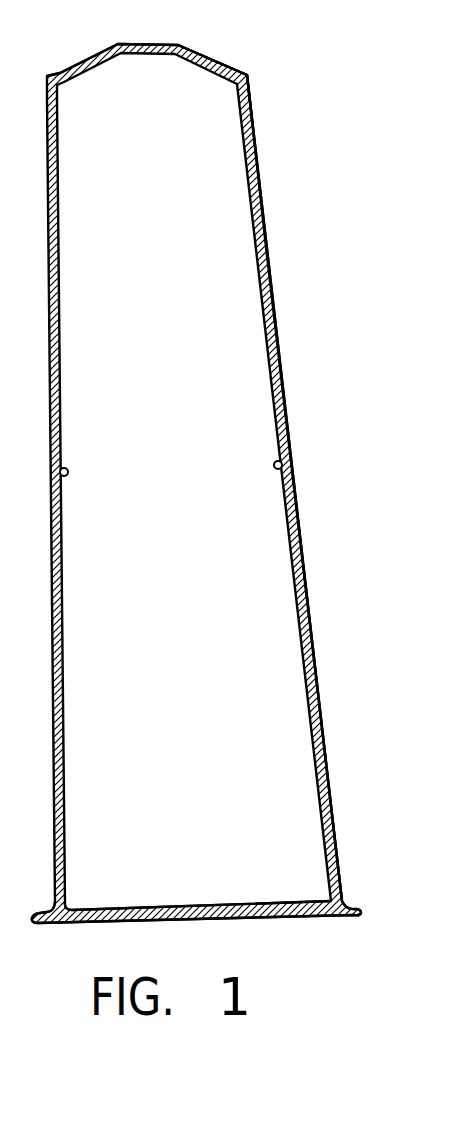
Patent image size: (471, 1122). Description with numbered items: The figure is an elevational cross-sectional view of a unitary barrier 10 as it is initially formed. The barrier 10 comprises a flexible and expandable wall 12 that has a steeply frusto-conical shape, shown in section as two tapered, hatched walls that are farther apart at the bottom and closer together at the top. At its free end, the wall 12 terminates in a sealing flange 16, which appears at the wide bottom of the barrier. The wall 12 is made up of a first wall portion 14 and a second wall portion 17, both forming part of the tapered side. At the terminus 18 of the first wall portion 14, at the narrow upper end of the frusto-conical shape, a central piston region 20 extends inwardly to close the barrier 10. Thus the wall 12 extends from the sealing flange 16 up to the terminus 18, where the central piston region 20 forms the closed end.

The unitary barrier 10 is at (331, 643).
The flexible and expandable wall 12 is at (316, 433).
The first wall portion 14 is at (266, 247).
The sealing flange 16 is at (354, 900).
The second wall portion 17 is at (303, 577).
The terminus 18 is at (244, 70).
The central piston region 20 is at (192, 47).